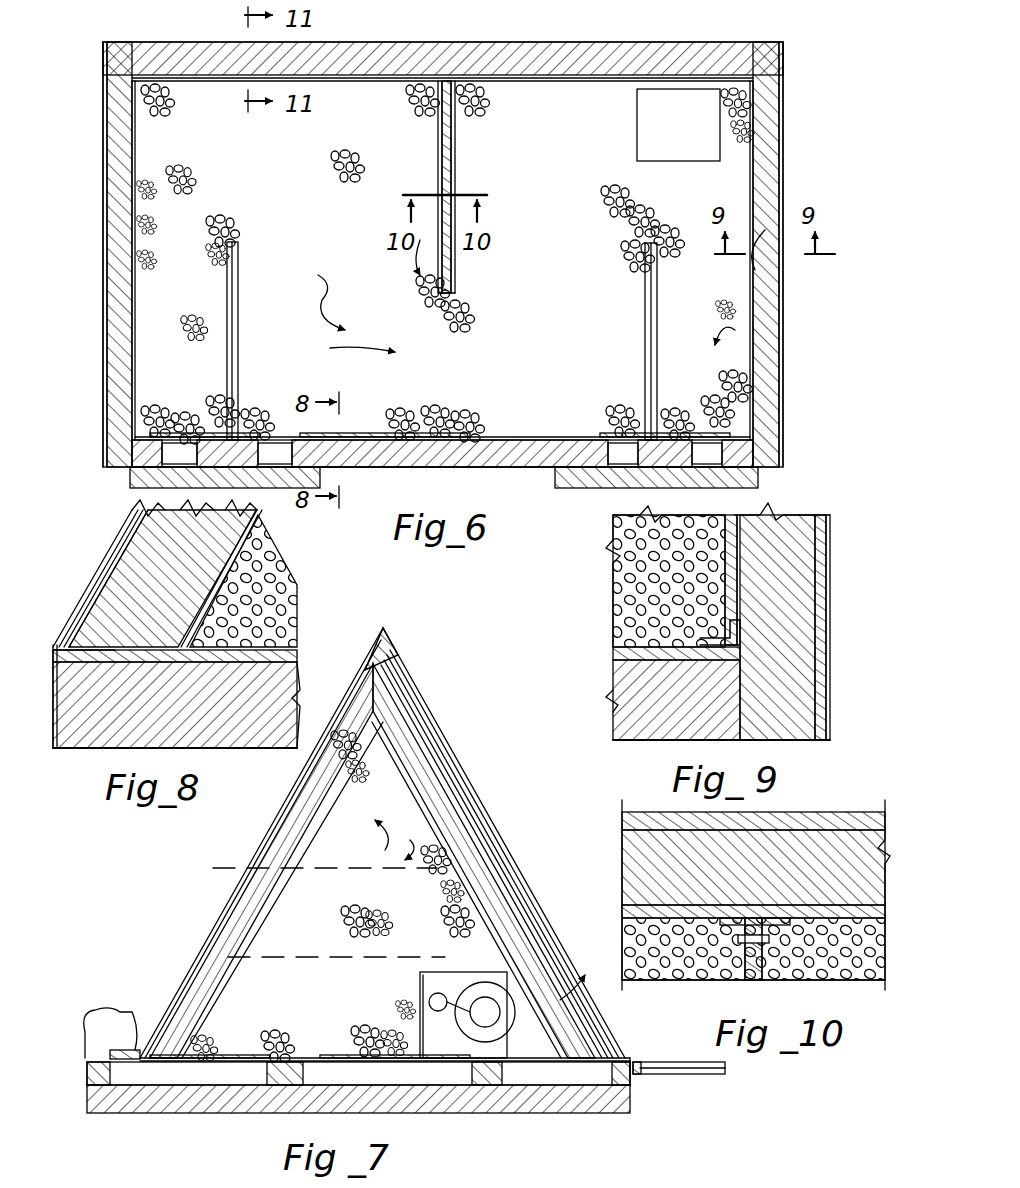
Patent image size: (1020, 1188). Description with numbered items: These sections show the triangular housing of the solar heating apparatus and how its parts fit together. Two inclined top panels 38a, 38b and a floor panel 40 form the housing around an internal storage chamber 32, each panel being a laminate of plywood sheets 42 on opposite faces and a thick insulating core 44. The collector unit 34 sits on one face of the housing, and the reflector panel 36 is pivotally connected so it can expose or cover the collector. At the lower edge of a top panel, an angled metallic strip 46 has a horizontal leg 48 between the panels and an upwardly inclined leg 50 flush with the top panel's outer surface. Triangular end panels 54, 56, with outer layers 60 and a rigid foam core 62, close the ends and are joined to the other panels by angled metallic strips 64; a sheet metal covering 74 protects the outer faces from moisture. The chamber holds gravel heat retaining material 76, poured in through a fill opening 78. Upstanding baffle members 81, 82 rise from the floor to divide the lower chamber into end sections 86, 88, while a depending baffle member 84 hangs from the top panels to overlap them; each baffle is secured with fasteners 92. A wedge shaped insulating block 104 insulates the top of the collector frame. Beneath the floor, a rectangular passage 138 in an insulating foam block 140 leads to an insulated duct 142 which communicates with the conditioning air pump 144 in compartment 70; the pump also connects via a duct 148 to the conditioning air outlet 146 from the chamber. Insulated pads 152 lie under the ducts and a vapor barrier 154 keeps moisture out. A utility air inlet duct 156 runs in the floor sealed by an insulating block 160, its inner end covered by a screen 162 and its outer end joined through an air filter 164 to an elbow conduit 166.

In FIG. 6, the internal storage chamber 32 is at (438, 233).
In FIG. 7, the internal storage chamber 32 is at (398, 742).
In FIG. 7, the collector unit 34 is at (382, 882).
In FIG. 7, the reflector panel 36 is at (695, 1058).
In FIG. 8, the inclined top panel 38a is at (140, 568).
In FIG. 10, the inclined top panel 38a is at (625, 862).
In FIG. 7, the inclined top panel 38a is at (173, 838).
In FIG. 7, the inclined top panel 38b is at (438, 810).
In FIG. 6, the floor panel 40 is at (492, 456).
In FIG. 8, the floor panel 40 is at (65, 715).
In FIG. 9, the floor panel 40 is at (625, 718).
In FIG. 7, the floor panel 40 is at (285, 1080).
In FIG. 6, the plywood sheets 42 is at (480, 436).
In FIG. 8, the plywood sheets 42 is at (100, 592).
In FIG. 9, the plywood sheets 42 is at (613, 652).
In FIG. 10, the plywood sheets 42 is at (624, 820).
In FIG. 7, the plywood sheets 42 is at (470, 864).
In FIG. 8, the insulating core 44 is at (216, 735).
In FIG. 9, the insulating core 44 is at (615, 685).
In FIG. 7, the insulating core 44 is at (467, 840).
In FIG. 8, the angled metallic strip 46 is at (60, 652).
In FIG. 8, the horizontal leg 48 is at (60, 688).
In FIG. 8, the upwardly inclined leg 50 is at (80, 622).
In FIG. 6, the end panel 54 is at (110, 252).
In FIG. 6, the end panel 56 is at (772, 152).
In FIG. 9, the end panel 56 is at (803, 696).
In FIG. 6, the outer layers 60 is at (122, 192).
In FIG. 9, the outer layers 60 is at (832, 528).
In FIG. 6, the rigid foam core 62 is at (112, 333).
In FIG. 9, the rigid foam core 62 is at (790, 582).
In FIG. 9, the angled metallic strips 64 is at (740, 628).
In FIG. 7, the pump containing compartment 70 is at (440, 980).
In FIG. 9, the sheet metal covering 74 is at (832, 625).
In FIG. 6, the heat retaining material 76 is at (242, 225).
In FIG. 8, the heat retaining material 76 is at (239, 578).
In FIG. 9, the heat retaining material 76 is at (665, 576).
In FIG. 7, the heat retaining material 76 is at (400, 860).
In FIG. 6, the fill opening 78 is at (640, 120).
In FIG. 6, the upstanding baffle member 81 is at (240, 346).
In FIG. 6, the upstanding baffle member 82 is at (645, 326).
In FIG. 7, the upstanding baffle member 82 is at (322, 858).
In FIG. 6, the depending baffle member 84 is at (452, 162).
In FIG. 10, the depending baffle member 84 is at (752, 982).
In FIG. 6, the end section 86 is at (170, 386).
In FIG. 6, the end section 88 is at (768, 314).
In FIG. 10, the fasteners 92 is at (730, 945).
In FIG. 7, the wedge shaped insulating block 104 is at (390, 652).
In FIG. 7, the rectangular passage 138 is at (625, 1078).
In FIG. 7, the insulating foam block 140 is at (640, 1075).
In FIG. 7, the insulated duct 142 is at (570, 1078).
In FIG. 7, the conditioning air pump 144 is at (437, 992).
In FIG. 7, the conditioning air outlet 146 is at (425, 1078).
In FIG. 7, the duct 148 is at (475, 1085).
In FIG. 6, the insulated pads 152 is at (150, 486).
In FIG. 7, the insulated pads 152 is at (245, 1115).
In FIG. 7, the vapor barrier 154 is at (90, 1098).
In FIG. 7, the inlet duct 156 is at (160, 1080).
In FIG. 7, the insulating block 160 is at (87, 1068).
In FIG. 7, the screen 162 is at (248, 1055).
In FIG. 7, the air filter 164 is at (125, 1048).
In FIG. 7, the elbow conduit 166 is at (100, 1018).